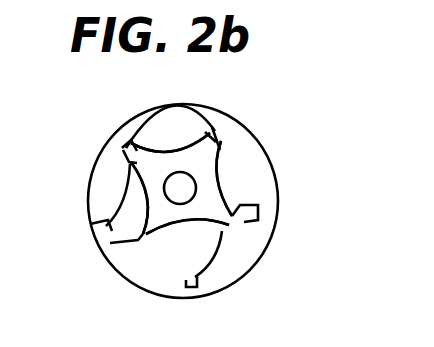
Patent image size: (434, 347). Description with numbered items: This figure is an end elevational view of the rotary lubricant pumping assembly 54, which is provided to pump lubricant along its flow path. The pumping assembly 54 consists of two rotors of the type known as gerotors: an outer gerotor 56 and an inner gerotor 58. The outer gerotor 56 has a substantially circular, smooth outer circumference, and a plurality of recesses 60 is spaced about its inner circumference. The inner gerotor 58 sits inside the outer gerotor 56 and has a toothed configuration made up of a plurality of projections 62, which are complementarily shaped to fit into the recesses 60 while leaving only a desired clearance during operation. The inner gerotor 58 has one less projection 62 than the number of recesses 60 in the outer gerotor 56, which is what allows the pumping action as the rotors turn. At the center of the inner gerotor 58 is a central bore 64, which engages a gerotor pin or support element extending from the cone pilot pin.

The rotary lubricant pumping assembly 54 is at (122, 301).
The outer gerotor 56 is at (230, 272).
The inner gerotor 58 is at (198, 164).
The recesses 60 is at (190, 108).
The projections 62 is at (215, 133).
The central bore 64 is at (183, 187).